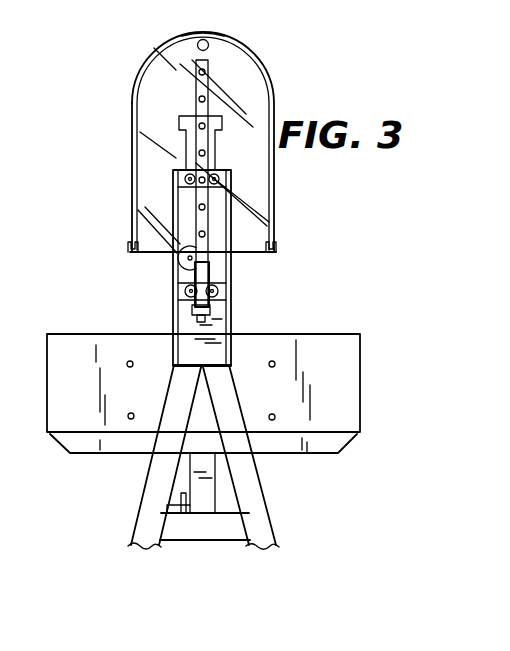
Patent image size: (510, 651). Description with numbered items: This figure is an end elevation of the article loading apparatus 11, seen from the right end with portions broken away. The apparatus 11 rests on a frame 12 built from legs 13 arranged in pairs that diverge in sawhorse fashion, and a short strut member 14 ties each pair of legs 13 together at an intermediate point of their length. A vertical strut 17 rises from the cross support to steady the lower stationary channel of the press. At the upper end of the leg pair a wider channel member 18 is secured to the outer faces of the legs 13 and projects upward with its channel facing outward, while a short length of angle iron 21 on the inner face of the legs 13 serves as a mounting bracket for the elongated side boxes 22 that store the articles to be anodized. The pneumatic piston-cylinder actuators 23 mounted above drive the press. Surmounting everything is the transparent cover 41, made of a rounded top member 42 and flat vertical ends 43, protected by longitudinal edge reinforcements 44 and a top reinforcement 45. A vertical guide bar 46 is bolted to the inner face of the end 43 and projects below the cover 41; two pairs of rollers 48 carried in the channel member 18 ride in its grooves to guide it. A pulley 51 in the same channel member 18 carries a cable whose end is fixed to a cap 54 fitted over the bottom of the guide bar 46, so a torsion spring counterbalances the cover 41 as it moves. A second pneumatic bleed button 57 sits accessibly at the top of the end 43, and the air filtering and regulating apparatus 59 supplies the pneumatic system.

The article loading apparatus 11 is at (298, 52).
The frame 12 is at (128, 520).
The legs 13 is at (152, 502).
The strut member 14 is at (165, 527).
The vertical strut 17 is at (214, 490).
The channel member 18 is at (187, 347).
The angle iron 21 is at (68, 449).
The side box 22 is at (52, 386).
The pneumatic piston-cylinder actuator 23 is at (184, 148).
The transparent cover 41 is at (259, 51).
The rounded top member 42 is at (146, 58).
The flat vertical end 43 is at (147, 90).
The longitudinal edge reinforcement 44 is at (129, 250).
The top reinforcement 45 is at (197, 32).
The guide bar 46 is at (197, 80).
The rollers 48 is at (188, 180).
The pulley 51 is at (187, 268).
The cap 54 is at (212, 310).
The second pneumatic bleed button 57 is at (209, 40).
The air filtering and regulating apparatus 59 is at (166, 500).